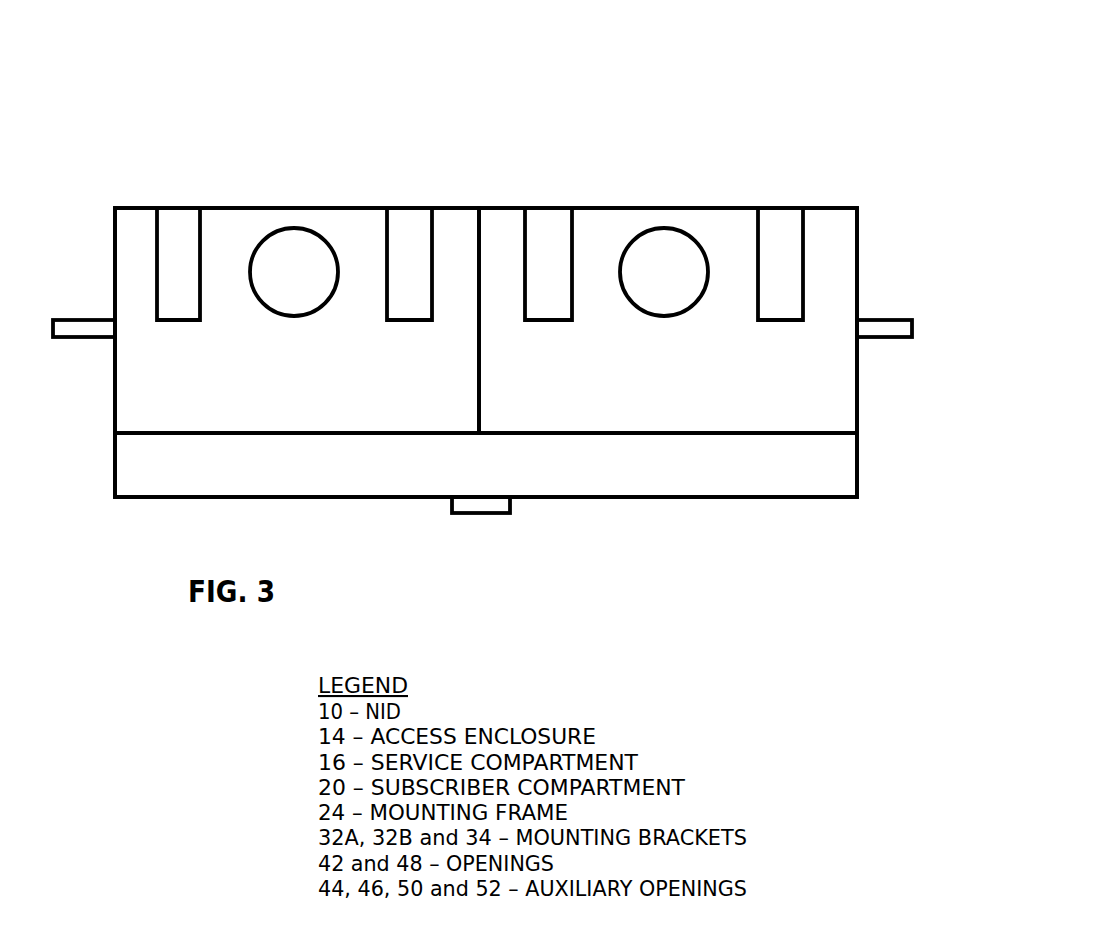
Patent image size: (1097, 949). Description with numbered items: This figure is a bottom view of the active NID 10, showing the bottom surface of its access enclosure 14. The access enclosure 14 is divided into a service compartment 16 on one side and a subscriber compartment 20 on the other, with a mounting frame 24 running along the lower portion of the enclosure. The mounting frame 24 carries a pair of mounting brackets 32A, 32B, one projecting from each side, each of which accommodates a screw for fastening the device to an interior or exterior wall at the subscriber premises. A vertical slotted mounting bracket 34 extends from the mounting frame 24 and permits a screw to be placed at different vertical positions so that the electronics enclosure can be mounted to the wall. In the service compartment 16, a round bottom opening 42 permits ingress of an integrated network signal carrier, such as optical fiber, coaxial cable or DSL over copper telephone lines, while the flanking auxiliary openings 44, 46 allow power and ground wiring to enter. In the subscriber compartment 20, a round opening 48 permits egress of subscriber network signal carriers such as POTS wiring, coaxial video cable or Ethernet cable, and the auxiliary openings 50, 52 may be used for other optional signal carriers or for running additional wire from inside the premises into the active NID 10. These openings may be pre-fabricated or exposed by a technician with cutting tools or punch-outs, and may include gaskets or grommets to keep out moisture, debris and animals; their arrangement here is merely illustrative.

The active NID 10 is at (753, 78).
The access enclosure 14 is at (857, 208).
The service compartment 16 is at (355, 207).
The subscriber compartment 20 is at (840, 383).
The mounting frame 24 is at (840, 470).
The mounting bracket 32A is at (865, 312).
The mounting bracket 32B is at (112, 322).
The vertical slotted mounting bracket 34 is at (475, 507).
The bottom opening 42 is at (277, 250).
The opening 48 is at (658, 250).
The auxiliary opening 44 is at (165, 220).
The auxiliary opening 46 is at (403, 220).
The auxiliary opening 50 is at (537, 225).
The auxiliary opening 52 is at (768, 218).